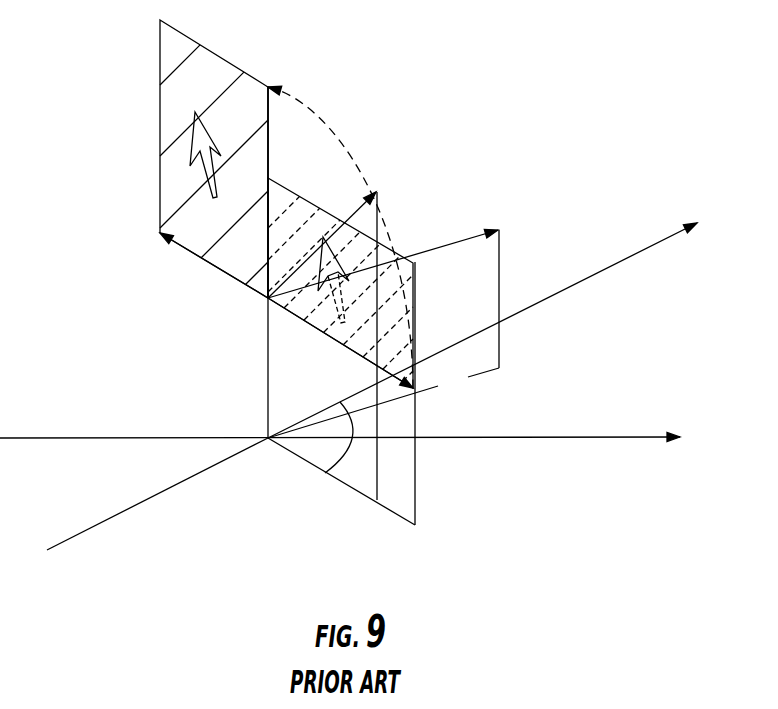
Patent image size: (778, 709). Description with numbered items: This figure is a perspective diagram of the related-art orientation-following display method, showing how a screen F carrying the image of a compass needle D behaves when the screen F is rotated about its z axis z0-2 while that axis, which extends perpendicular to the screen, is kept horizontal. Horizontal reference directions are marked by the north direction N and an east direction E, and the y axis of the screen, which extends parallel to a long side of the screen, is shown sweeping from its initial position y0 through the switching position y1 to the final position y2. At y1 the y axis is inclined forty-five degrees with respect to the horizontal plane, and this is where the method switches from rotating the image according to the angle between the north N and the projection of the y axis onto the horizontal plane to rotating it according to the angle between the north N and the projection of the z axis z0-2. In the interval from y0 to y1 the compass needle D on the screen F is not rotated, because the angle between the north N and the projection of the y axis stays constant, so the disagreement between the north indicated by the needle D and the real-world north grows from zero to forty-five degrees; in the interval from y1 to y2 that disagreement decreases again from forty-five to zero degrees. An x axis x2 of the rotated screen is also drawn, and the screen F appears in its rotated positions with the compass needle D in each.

The screen F is at (178, 67).
The compass needle D is at (193, 142).
The y axis end position y2 is at (278, 178).
The y axis switching position y1 is at (339, 239).
The x2 axis x2 is at (202, 265).
The z axis z0-2 is at (394, 247).
The y axis initial position y0 is at (368, 347).
The north direction N is at (493, 325).
The east axis E is at (349, 439).